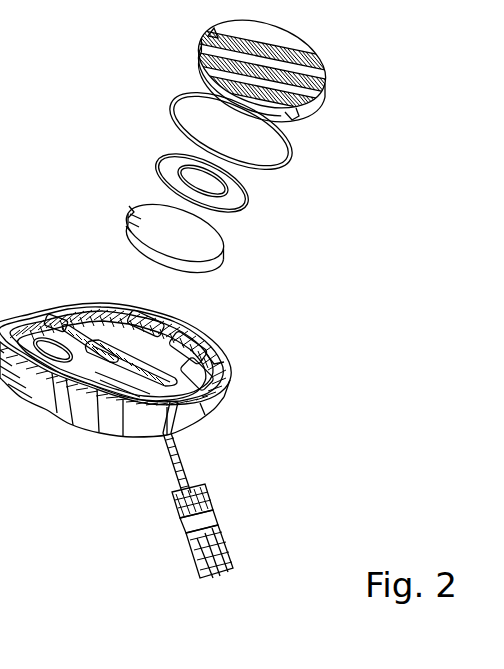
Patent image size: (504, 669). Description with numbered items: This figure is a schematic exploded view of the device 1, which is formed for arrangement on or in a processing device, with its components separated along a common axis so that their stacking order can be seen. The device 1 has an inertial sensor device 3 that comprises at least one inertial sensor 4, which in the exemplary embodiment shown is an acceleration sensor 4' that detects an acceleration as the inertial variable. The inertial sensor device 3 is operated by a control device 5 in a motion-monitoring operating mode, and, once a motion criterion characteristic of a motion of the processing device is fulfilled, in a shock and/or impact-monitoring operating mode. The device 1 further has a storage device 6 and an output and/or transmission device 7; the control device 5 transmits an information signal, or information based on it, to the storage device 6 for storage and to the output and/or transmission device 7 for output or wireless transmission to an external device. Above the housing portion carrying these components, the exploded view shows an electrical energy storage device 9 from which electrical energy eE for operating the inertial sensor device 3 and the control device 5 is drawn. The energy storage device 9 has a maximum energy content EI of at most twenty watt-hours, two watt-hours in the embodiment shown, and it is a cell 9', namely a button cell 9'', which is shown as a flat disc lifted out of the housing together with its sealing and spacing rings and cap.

The device 1 is at (77, 153).
The inertial sensor device 3 is at (62, 418).
The inertial sensor 4 is at (122, 402).
The acceleration sensor 4' is at (122, 402).
The control device 5 is at (128, 422).
The storage device 6 is at (212, 418).
The output and/or transmission device 7 is at (214, 361).
The electrical energy storage device 9 is at (243, 244).
The cell 9' is at (243, 244).
The button cell 9'' is at (243, 244).
The electrical energy eE is at (130, 211).
The maximum energy content EI is at (127, 228).